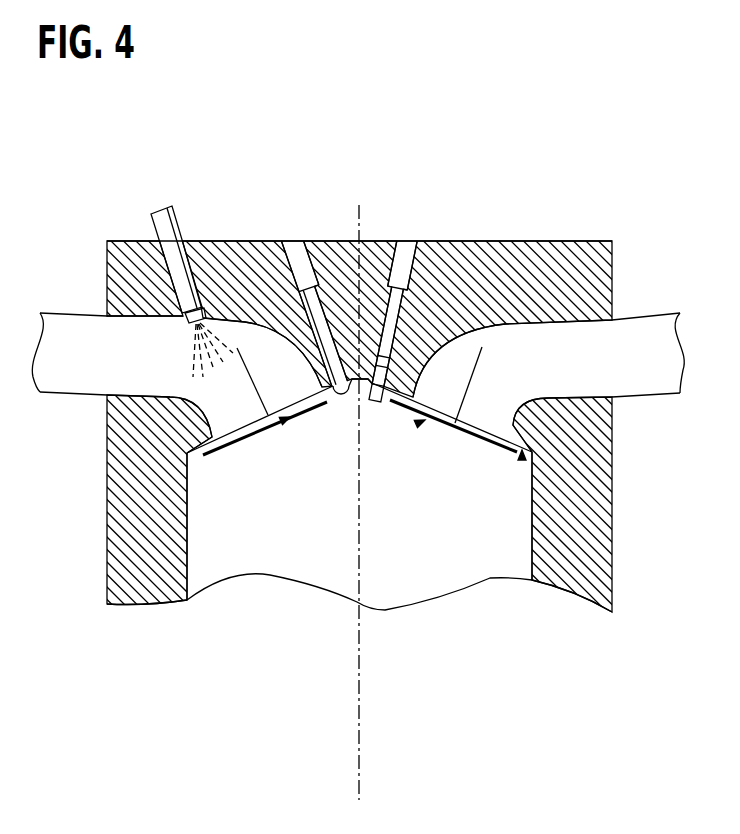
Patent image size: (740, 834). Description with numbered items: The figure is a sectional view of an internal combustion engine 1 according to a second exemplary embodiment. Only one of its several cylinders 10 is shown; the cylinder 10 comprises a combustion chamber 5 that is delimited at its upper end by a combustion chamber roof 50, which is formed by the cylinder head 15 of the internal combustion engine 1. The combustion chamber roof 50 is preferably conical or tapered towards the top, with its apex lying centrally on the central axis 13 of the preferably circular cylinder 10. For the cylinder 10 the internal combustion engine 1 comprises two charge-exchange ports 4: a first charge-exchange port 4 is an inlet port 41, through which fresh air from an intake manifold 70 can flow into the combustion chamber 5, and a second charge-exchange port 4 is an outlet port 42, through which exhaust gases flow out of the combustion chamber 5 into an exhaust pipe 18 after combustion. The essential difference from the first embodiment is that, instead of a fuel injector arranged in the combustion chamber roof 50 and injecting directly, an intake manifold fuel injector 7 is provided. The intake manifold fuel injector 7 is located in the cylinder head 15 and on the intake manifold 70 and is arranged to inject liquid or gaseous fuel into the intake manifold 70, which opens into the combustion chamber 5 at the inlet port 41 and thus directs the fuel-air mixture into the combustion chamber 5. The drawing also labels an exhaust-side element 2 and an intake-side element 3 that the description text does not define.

The internal combustion engine 1 is at (586, 154).
The exhaust valve 2 is at (396, 320).
The intake valve 3 is at (312, 318).
The charge-exchange port 4 is at (288, 420).
The combustion chamber 5 is at (293, 530).
The intake manifold fuel injector 7 is at (162, 230).
The cylinder 10 is at (555, 505).
The central axis 13 is at (359, 753).
The cylinder head 15 is at (340, 277).
The exhaust pipe 18 is at (642, 352).
The inlet port 41 is at (230, 420).
The outlet port 42 is at (480, 417).
The combustion chamber roof 50 is at (522, 458).
The intake manifold 70 is at (72, 367).